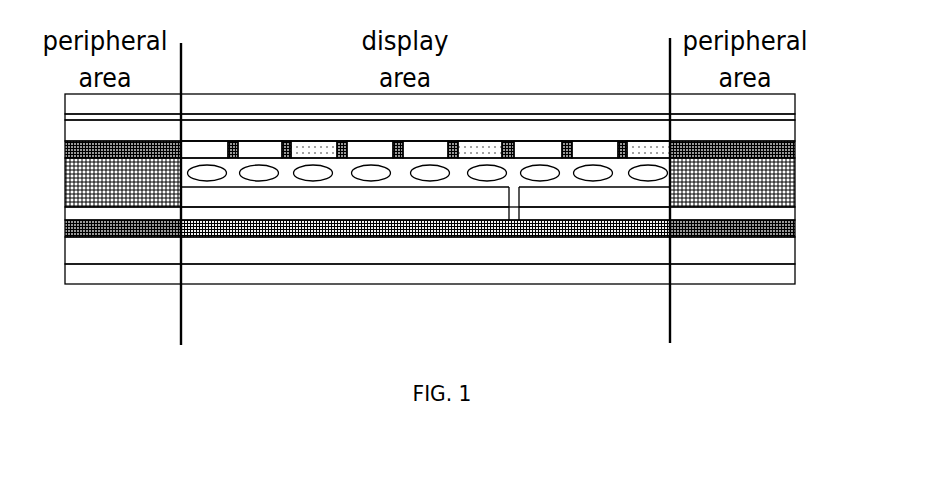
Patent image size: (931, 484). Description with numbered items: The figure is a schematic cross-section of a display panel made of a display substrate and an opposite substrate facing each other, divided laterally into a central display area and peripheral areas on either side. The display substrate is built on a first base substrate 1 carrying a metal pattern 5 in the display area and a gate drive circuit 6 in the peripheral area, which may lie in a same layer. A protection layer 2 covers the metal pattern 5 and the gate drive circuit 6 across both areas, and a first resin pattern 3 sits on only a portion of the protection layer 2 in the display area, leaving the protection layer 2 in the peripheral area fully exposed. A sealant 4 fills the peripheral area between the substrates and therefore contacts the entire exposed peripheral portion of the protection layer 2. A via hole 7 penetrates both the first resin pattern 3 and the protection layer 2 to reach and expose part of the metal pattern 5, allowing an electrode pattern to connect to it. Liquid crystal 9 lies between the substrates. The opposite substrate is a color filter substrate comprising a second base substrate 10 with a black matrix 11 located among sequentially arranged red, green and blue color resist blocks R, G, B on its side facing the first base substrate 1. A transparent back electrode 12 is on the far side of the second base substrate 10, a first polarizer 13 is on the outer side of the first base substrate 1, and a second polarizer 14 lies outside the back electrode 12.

The first base substrate 1 is at (452, 253).
The protection layer 2 is at (263, 213).
The first resin pattern 3 is at (385, 194).
The sealant 4 is at (166, 189).
The metal pattern 5 is at (632, 228).
The gate drive circuit 6 is at (105, 228).
The via hole 7 is at (517, 212).
The liquid crystal 9 is at (430, 181).
The second base substrate 10 is at (622, 132).
The black matrix 11 is at (456, 143).
The back electrode 12 is at (502, 120).
The first polarizer 13 is at (559, 267).
The second polarizer 14 is at (571, 109).
The red color resist block R is at (204, 152).
The green color resist block G is at (258, 152).
The blue color resist block B is at (313, 150).